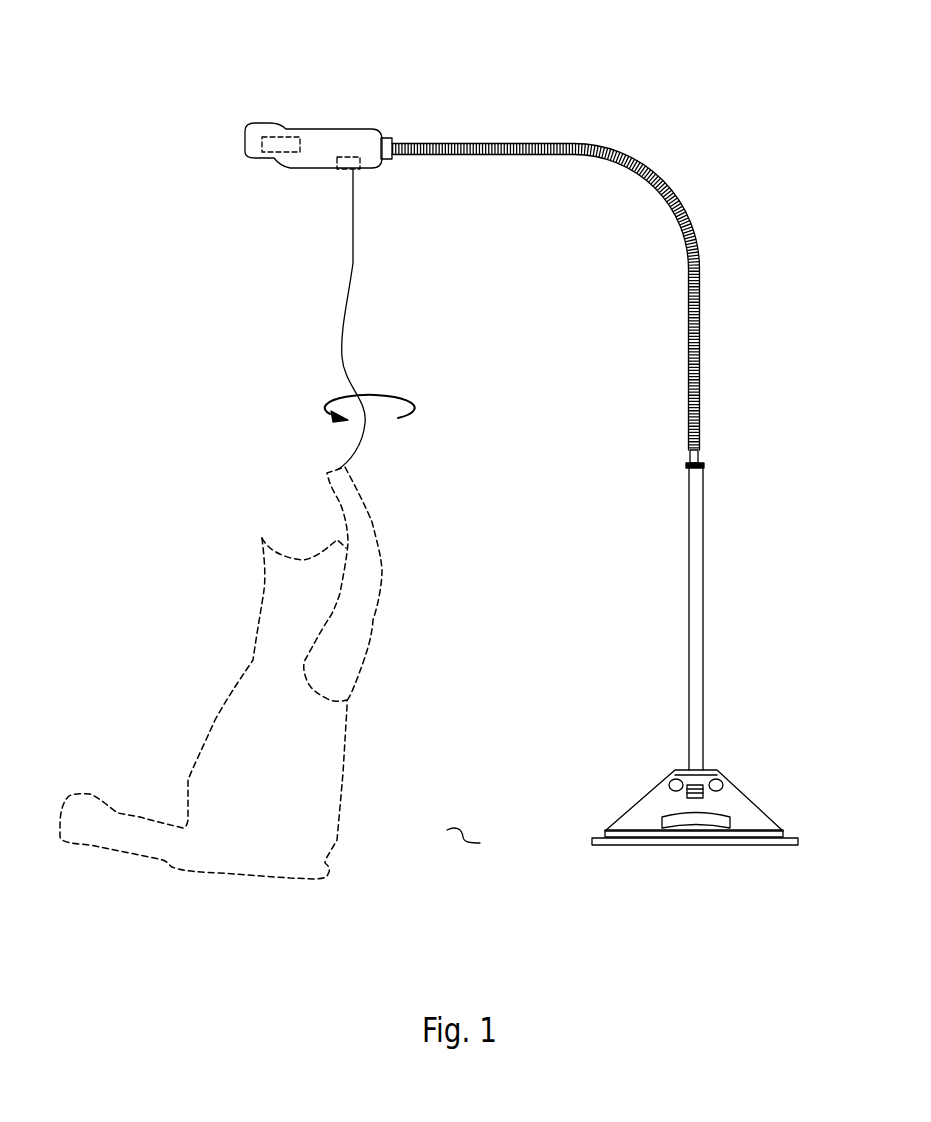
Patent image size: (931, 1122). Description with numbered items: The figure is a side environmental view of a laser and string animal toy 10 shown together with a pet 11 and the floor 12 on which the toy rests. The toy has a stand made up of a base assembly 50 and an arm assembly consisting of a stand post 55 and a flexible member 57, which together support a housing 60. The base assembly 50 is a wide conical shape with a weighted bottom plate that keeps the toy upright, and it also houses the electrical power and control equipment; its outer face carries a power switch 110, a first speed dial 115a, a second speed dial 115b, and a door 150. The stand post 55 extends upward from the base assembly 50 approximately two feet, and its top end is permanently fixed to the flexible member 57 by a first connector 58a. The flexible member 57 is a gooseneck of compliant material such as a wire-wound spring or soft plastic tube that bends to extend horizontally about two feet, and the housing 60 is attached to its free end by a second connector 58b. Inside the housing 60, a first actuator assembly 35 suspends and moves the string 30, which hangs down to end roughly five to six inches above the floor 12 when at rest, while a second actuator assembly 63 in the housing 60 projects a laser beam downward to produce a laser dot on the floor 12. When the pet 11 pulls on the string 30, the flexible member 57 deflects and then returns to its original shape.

The laser and string animal toy 10 is at (724, 146).
The pet 11 is at (258, 548).
The floor 12 is at (465, 837).
The string 30 is at (355, 262).
The first actuator assembly 35 is at (363, 168).
The base assembly 50 is at (740, 788).
The stand post 55 is at (695, 579).
The flexible member 57 is at (700, 268).
The first connector 58a is at (699, 455).
The second connector 58b is at (392, 140).
The housing 60 is at (345, 128).
The second actuator assembly 63 is at (262, 143).
The power switch 110 is at (687, 797).
The first speed dial 115a is at (673, 777).
The second speed dial 115b is at (717, 777).
The door 150 is at (713, 825).